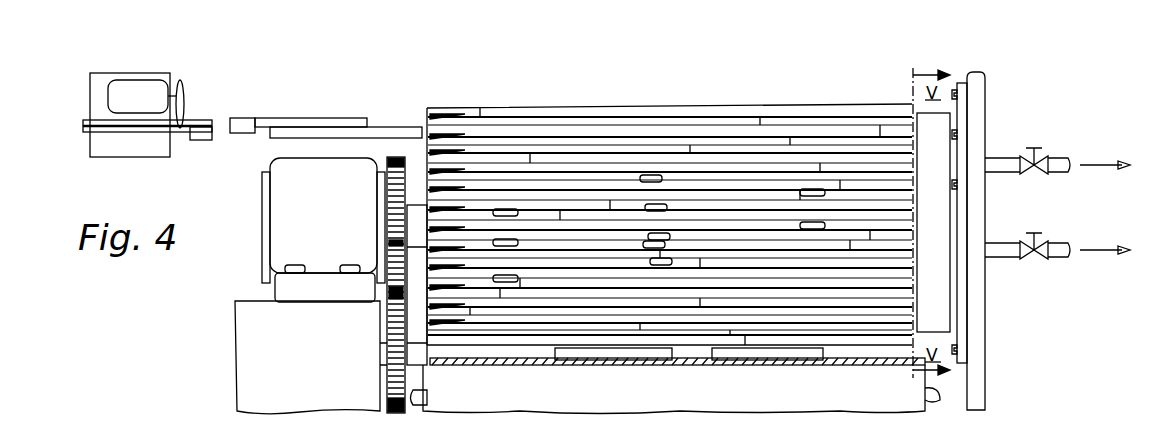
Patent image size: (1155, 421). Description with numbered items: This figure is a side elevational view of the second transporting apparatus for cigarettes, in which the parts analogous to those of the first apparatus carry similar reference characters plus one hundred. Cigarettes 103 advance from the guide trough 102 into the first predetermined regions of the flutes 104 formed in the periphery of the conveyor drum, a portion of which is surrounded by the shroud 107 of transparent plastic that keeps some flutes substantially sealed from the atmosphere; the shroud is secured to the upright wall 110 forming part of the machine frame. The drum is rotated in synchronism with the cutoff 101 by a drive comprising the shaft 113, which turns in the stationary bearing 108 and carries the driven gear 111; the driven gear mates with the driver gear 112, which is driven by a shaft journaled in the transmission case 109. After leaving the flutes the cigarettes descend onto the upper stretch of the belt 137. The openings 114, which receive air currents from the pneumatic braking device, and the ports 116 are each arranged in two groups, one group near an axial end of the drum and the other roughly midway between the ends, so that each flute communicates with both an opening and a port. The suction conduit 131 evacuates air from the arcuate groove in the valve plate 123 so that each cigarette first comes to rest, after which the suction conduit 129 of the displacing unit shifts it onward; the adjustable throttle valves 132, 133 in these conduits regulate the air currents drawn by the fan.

The cutoff 101 is at (122, 95).
The guide trough 102 is at (203, 134).
The cigarettes 103 is at (200, 128).
The flutes 104 is at (437, 195).
The shroud 107 is at (470, 96).
The stationary bearing 108 is at (290, 196).
The transmission case 109 is at (252, 312).
The upright wall 110 is at (985, 377).
The driven gear 111 is at (388, 165).
The driver gear 112 is at (398, 385).
The shaft 113 is at (412, 222).
The openings 114 is at (512, 280).
The ports 116 is at (662, 236).
The valve plate 123 is at (937, 125).
The suction conduit 129 is at (1003, 252).
The suction conduit 131 is at (992, 175).
The adjustable throttle valve 132 is at (1046, 250).
The adjustable throttle valve 133 is at (1046, 165).
The belt 137 is at (500, 365).